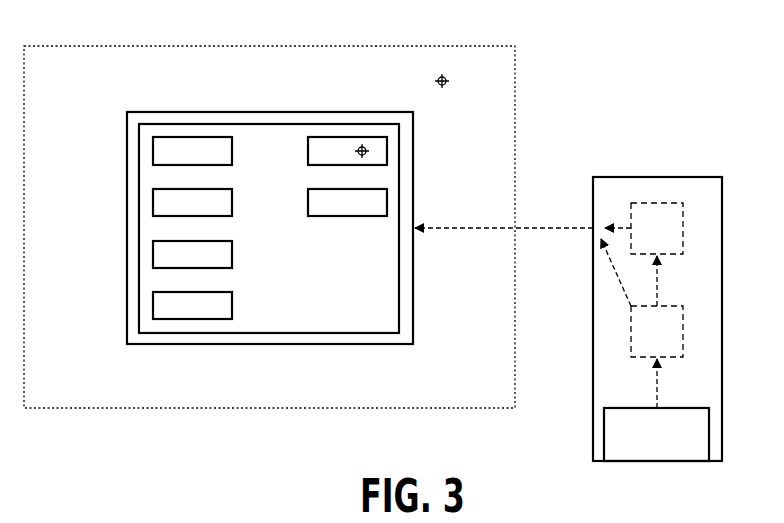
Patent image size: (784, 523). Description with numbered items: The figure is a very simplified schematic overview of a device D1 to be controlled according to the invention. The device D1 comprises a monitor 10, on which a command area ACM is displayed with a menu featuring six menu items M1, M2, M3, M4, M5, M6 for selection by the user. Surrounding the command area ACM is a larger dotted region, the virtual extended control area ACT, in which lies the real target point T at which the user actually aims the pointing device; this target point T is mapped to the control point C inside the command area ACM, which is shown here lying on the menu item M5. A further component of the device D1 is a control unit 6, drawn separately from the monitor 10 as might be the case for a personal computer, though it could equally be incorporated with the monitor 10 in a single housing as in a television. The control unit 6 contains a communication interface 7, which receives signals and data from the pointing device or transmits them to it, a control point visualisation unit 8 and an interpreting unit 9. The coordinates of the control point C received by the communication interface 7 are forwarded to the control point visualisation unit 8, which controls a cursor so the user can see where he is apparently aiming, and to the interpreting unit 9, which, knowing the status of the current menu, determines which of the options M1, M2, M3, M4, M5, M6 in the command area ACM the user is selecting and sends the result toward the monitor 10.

The monitor 10 is at (269, 337).
The command area ACM is at (385, 311).
The virtual extended control area ACT is at (503, 100).
The menu item M1 is at (157, 153).
The menu item M2 is at (157, 205).
The menu item M3 is at (157, 257).
The menu item M4 is at (157, 308).
The menu item M5 is at (378, 151).
The menu item M6 is at (378, 203).
The control point C is at (358, 147).
The target point T is at (445, 77).
The device to be controlled D1 is at (595, 273).
The control unit 6 is at (713, 388).
The communication interface 7 is at (664, 452).
The control point visualisation unit 8 is at (672, 328).
The interpreting unit 9 is at (672, 225).